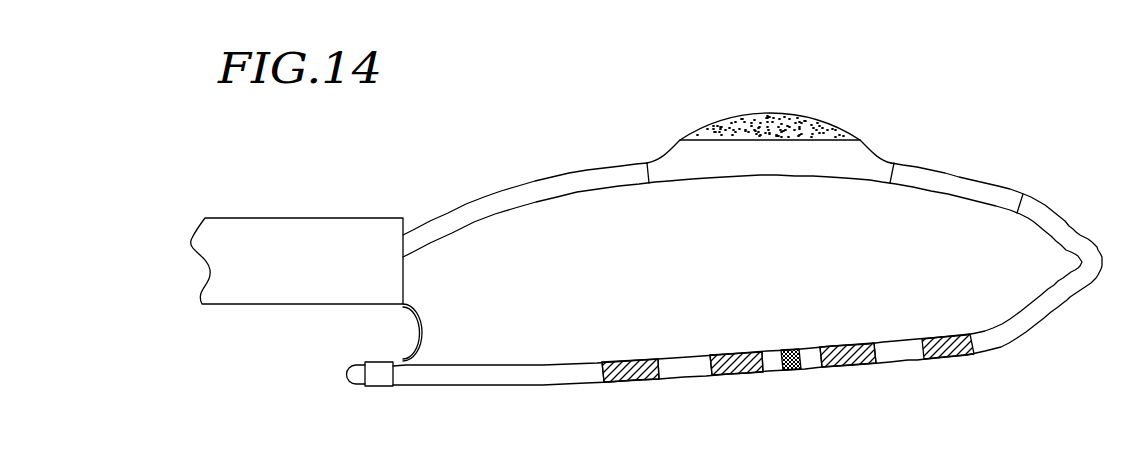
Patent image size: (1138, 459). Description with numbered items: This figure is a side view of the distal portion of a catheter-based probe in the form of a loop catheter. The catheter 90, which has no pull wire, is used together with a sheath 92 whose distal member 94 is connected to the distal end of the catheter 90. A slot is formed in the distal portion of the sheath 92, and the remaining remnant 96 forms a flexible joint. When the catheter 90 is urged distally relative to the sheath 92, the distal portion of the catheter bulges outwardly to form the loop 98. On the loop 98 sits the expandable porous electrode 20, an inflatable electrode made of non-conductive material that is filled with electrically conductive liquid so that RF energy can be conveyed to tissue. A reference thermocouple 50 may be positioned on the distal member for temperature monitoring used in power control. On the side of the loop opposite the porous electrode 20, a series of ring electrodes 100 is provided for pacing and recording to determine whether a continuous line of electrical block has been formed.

The catheter 90 is at (551, 89).
The expandable porous electrode 20 is at (888, 135).
The loop 98 is at (982, 160).
The sheath 92 is at (322, 218).
The remnant 96 is at (422, 330).
The distal member 94 is at (378, 387).
The reference thermocouple 50 is at (792, 378).
The electrodes 100 is at (950, 352).